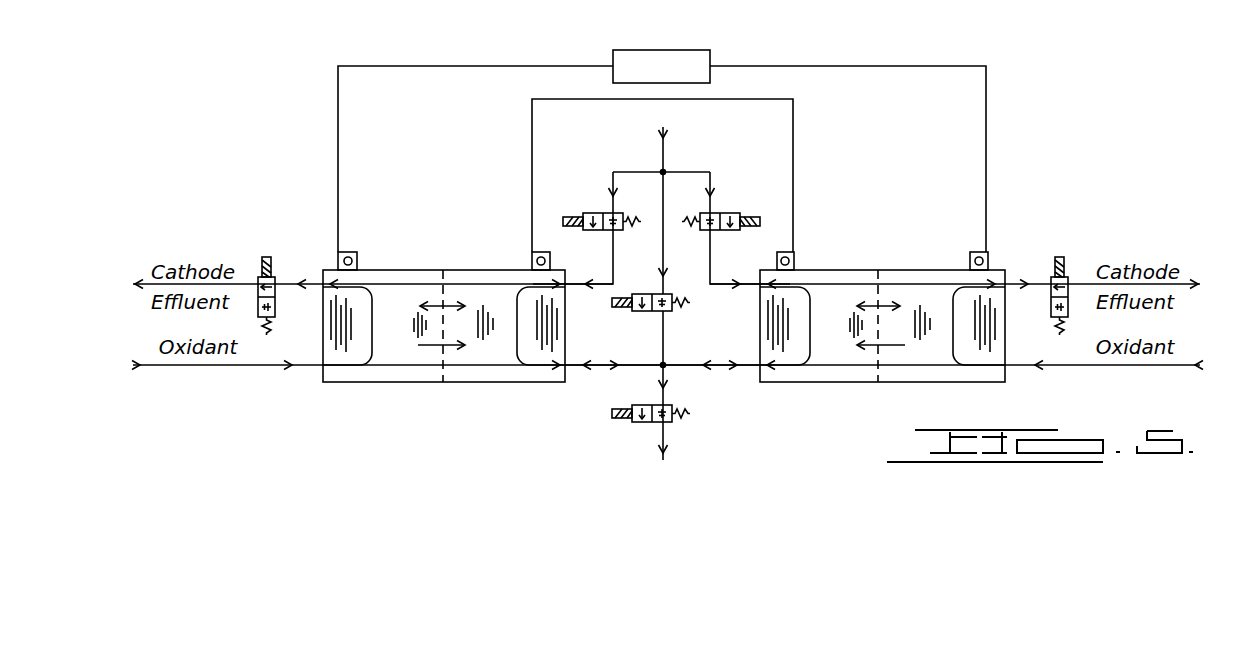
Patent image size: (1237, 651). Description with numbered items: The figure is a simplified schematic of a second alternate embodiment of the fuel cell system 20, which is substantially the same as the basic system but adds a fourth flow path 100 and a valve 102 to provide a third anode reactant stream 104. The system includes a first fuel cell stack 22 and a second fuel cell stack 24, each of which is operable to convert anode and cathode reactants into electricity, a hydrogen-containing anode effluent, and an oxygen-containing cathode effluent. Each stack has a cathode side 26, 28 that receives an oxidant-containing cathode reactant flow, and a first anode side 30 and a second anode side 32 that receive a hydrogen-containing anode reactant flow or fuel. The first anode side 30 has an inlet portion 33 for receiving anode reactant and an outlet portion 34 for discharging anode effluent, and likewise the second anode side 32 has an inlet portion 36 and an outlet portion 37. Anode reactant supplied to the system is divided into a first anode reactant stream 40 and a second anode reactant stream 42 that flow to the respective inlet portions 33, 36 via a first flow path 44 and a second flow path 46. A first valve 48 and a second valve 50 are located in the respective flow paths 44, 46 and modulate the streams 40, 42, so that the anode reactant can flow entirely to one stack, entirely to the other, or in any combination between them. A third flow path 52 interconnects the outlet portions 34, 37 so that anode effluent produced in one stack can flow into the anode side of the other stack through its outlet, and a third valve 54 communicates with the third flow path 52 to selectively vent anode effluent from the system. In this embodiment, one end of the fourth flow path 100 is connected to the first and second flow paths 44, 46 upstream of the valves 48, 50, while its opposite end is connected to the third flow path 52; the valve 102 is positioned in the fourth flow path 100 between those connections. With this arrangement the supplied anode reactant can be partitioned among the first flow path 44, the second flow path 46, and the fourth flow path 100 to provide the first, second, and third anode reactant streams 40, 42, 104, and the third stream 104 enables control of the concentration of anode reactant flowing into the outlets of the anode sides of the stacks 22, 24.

The fuel cell system 20 is at (1014, 104).
The first fuel cell stack 22 is at (444, 337).
The second fuel cell stack 24 is at (882, 339).
The cathode side 26 is at (364, 372).
The cathode side 28 is at (920, 372).
The first anode side 30 is at (477, 372).
The second anode side 32 is at (808, 372).
The inlet portion 33 is at (577, 295).
The outlet portion 34 is at (573, 362).
The inlet portion 36 is at (749, 296).
The outlet portion 37 is at (751, 359).
The first anode reactant stream 40 is at (612, 254).
The second anode reactant stream 42 is at (712, 266).
The first flow path 44 is at (613, 176).
The second flow path 46 is at (712, 176).
The first valve 48 is at (589, 213).
The second valve 50 is at (739, 213).
The third flow path 52 is at (598, 368).
The third valve 54 is at (630, 424).
The fourth flow path 100 is at (665, 192).
The valve 102 is at (669, 294).
The third anode reactant stream 104 is at (677, 367).